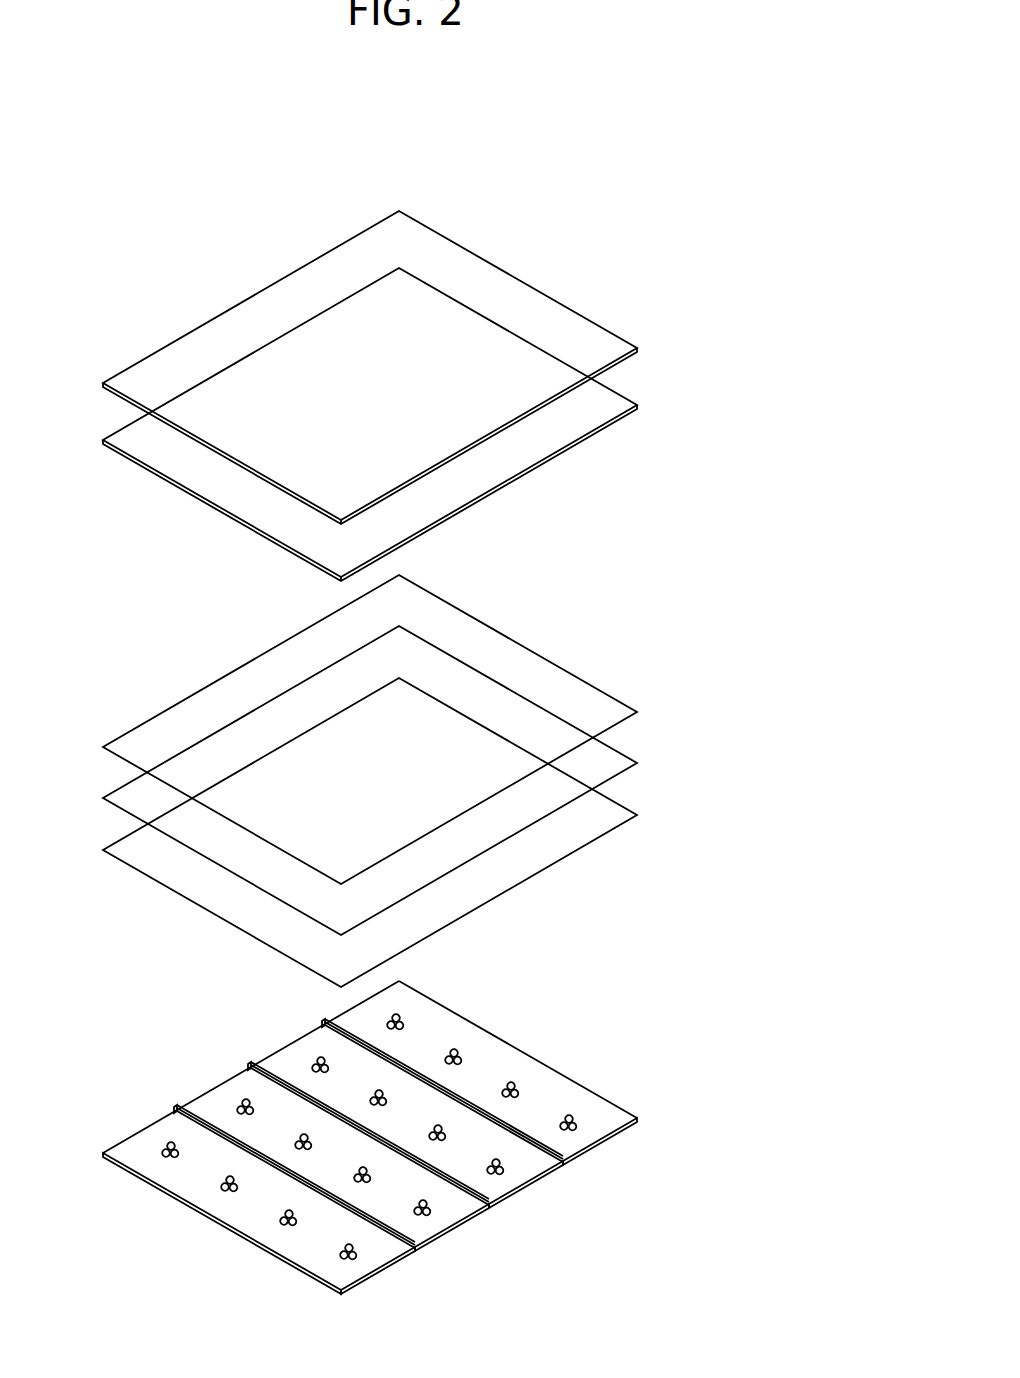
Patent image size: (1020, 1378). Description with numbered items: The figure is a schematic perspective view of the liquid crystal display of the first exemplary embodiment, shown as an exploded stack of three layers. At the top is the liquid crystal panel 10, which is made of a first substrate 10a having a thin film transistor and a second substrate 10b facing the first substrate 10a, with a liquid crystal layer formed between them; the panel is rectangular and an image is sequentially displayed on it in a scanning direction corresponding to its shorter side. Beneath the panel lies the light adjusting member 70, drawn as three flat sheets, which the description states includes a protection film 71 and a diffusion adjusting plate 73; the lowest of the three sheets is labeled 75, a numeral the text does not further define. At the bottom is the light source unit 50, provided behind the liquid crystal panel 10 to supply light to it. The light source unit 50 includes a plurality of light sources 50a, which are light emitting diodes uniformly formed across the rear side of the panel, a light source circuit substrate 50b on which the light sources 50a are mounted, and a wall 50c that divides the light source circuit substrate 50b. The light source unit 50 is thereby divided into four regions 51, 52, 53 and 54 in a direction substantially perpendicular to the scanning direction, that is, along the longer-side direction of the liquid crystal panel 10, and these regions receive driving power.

The liquid crystal panel 10 is at (439, 396).
The first substrate 10a is at (638, 405).
The second substrate 10b is at (638, 348).
The light adjusting member 70 is at (434, 781).
The protection film 71 is at (638, 712).
The diffusion adjusting plate 73 is at (638, 763).
The third intermediate sheet 75 is at (720, 707).
The light source unit 50 is at (377, 1157).
The light sources 50a is at (456, 1050).
The light source circuit substrate 50b is at (556, 1090).
The wall 50c is at (285, 1173).
The region 51 is at (491, 1094).
The region 52 is at (513, 1177).
The region 53 is at (443, 1217).
The region 54 is at (365, 1263).